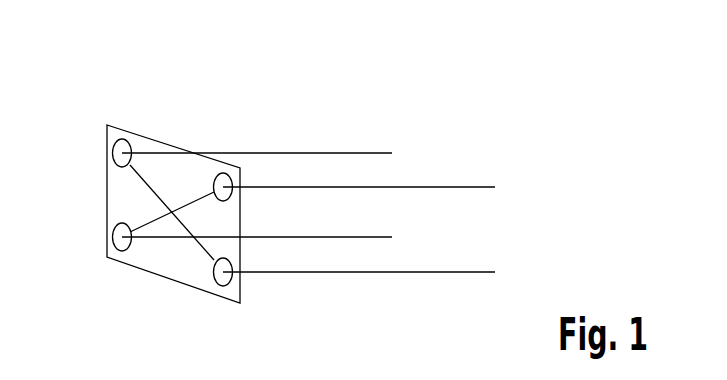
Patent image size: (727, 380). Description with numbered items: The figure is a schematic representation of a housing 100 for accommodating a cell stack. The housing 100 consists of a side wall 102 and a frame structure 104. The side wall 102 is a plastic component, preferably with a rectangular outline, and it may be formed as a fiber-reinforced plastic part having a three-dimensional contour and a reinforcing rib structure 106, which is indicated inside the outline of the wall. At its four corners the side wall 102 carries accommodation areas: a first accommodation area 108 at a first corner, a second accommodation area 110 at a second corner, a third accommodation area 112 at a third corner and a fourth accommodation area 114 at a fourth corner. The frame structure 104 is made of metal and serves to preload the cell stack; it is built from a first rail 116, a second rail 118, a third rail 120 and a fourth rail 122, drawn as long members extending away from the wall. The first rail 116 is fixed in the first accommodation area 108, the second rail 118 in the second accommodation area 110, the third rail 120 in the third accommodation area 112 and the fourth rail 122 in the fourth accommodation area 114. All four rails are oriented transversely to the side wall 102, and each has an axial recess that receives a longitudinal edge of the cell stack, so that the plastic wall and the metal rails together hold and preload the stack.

The housing 100 is at (138, 62).
The side wall 102 is at (127, 129).
The frame structure 104 is at (305, 74).
The reinforcing rib structure 106 is at (173, 165).
The first accommodation area 108 is at (112, 237).
The second accommodation area 110 is at (222, 287).
The third accommodation area 112 is at (222, 173).
The fourth accommodation area 114 is at (112, 153).
The first rail 116 is at (367, 238).
The second rail 118 is at (467, 275).
The third rail 120 is at (467, 187).
The fourth rail 122 is at (365, 153).